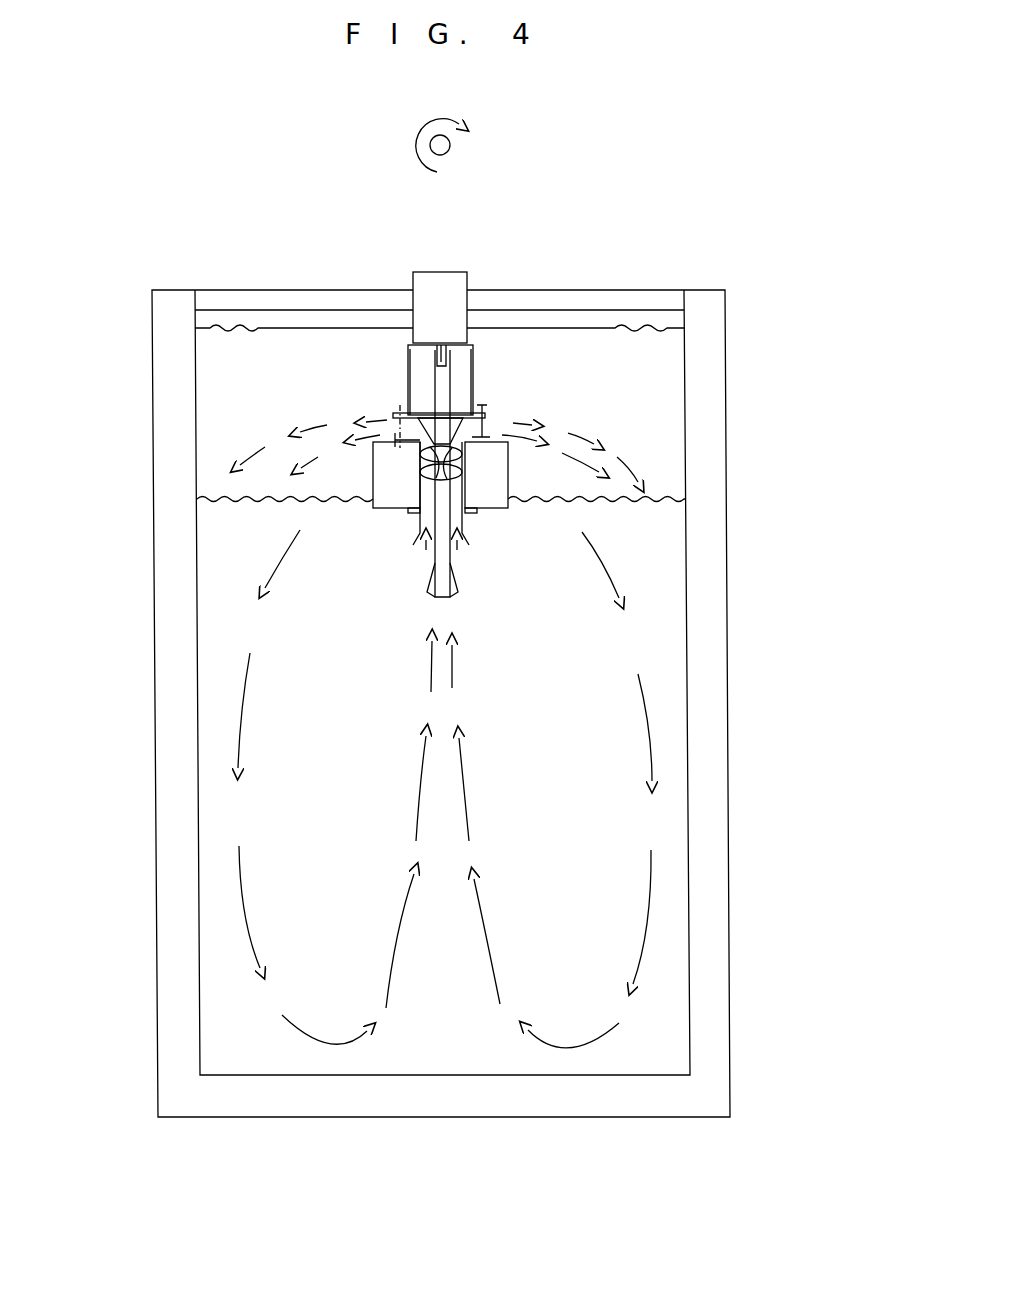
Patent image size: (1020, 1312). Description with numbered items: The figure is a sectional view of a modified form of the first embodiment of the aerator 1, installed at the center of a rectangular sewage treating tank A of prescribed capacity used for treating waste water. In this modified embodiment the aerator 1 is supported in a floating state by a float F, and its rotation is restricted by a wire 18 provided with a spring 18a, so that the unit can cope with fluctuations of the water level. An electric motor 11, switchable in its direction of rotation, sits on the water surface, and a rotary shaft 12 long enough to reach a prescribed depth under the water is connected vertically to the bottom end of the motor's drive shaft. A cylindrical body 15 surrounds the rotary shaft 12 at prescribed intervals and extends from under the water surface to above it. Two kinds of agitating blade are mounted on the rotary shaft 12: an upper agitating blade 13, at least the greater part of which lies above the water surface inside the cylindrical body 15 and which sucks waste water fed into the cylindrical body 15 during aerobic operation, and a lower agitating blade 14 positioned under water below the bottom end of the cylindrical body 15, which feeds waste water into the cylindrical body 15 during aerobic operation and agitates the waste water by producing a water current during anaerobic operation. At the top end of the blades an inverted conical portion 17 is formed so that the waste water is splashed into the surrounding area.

The aerator 1 is at (400, 356).
The electric motor 11 is at (447, 302).
The rotary shaft 12 is at (445, 527).
The upper agitating blade 13 is at (422, 456).
The lower agitating blade 14 is at (455, 585).
The cylindrical body 15 is at (373, 505).
The inverted conical portion 17 is at (390, 432).
The wire 18 is at (292, 328).
The spring 18a is at (237, 328).
The float F is at (508, 487).
The sewage treating tank A is at (710, 768).